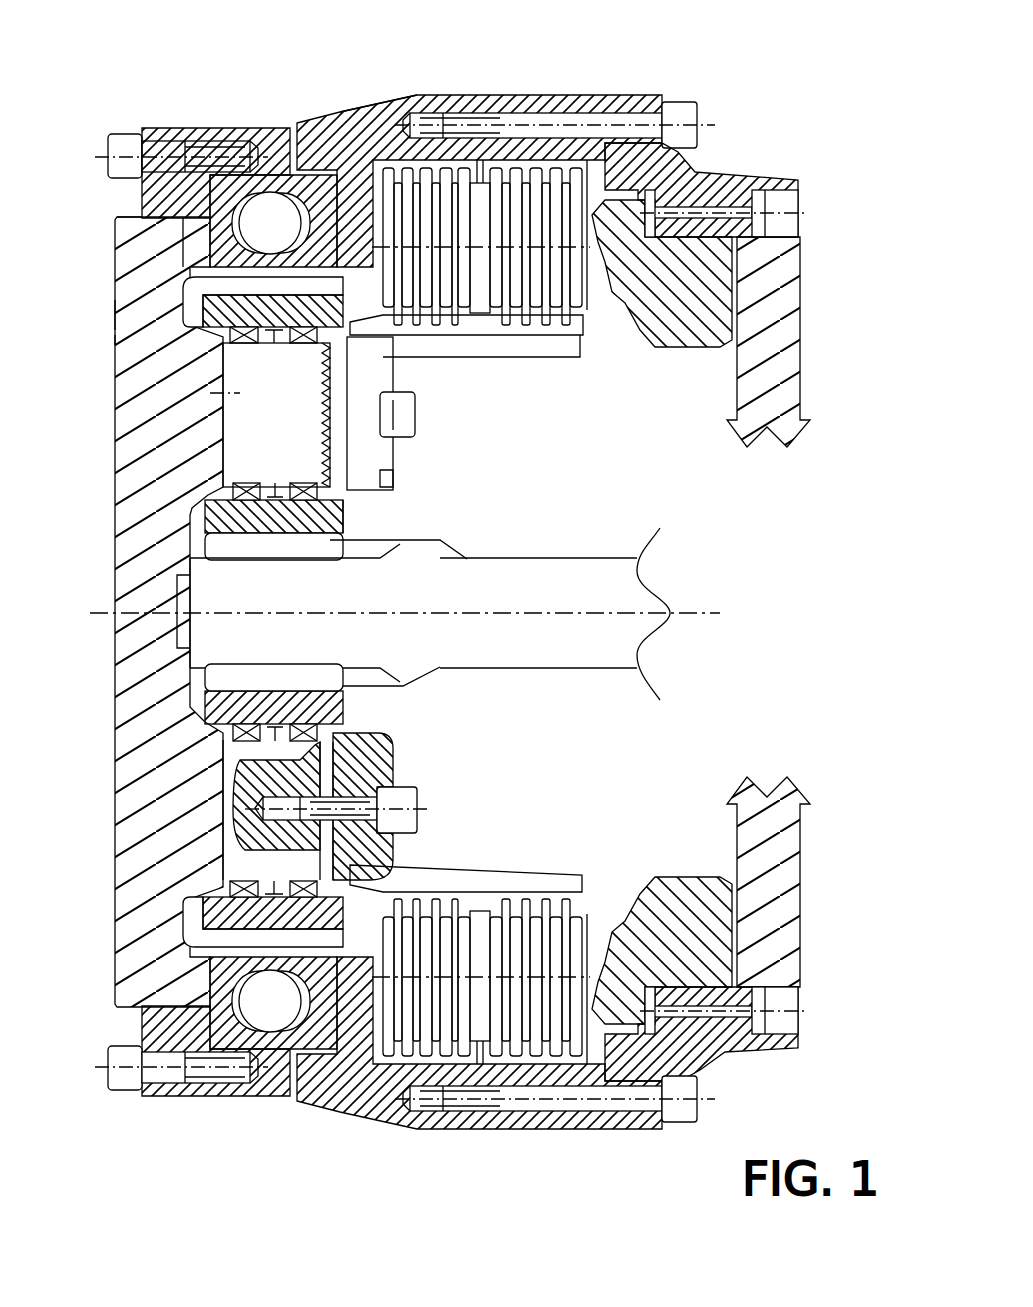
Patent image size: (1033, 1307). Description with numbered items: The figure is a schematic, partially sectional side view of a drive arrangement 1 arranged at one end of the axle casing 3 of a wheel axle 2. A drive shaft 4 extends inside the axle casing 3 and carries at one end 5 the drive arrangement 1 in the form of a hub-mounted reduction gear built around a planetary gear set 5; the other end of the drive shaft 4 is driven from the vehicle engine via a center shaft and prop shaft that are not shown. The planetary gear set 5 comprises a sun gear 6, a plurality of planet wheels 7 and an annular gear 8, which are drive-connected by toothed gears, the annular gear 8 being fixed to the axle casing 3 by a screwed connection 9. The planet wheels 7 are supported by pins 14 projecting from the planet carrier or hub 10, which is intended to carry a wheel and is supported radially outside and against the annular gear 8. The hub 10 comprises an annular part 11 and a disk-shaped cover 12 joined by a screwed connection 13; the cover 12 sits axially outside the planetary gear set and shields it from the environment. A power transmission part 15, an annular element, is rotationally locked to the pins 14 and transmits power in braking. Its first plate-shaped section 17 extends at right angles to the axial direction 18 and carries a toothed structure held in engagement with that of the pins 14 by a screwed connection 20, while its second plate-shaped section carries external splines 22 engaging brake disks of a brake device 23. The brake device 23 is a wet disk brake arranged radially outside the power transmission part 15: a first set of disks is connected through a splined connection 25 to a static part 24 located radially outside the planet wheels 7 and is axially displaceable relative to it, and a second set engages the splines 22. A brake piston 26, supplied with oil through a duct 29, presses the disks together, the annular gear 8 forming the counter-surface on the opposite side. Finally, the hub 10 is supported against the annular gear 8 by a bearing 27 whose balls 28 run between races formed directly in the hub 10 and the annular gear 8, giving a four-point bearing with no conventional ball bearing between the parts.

The drive arrangement 1 is at (85, 313).
The wheel axle 2 is at (826, 264).
The axle casing 3 is at (703, 177).
The drive shaft 4 is at (567, 570).
The planetary gear set 5 is at (420, 723).
The sun gear 6 is at (377, 547).
The planet wheels 7 is at (343, 517).
The annular gear 8 is at (252, 216).
The screwed connection 9 is at (684, 110).
The hub 10 is at (178, 486).
The annular part 11 is at (263, 128).
The disk-shaped cover 12 is at (133, 340).
The screwed connection 13 is at (113, 133).
The pins 14 is at (243, 393).
The power transmission part 15 is at (380, 350).
The first plate-shaped section 17 is at (407, 477).
The axial direction 18 is at (697, 617).
The screwed connection 20 is at (403, 430).
The splines 22 is at (480, 330).
The brake device 23 is at (562, 370).
The static part 24 is at (380, 103).
The splined connection 25 is at (353, 113).
The brake piston 26 is at (690, 345).
The bearing 27 is at (103, 190).
The balls 28 is at (187, 224).
The duct 29 is at (723, 213).